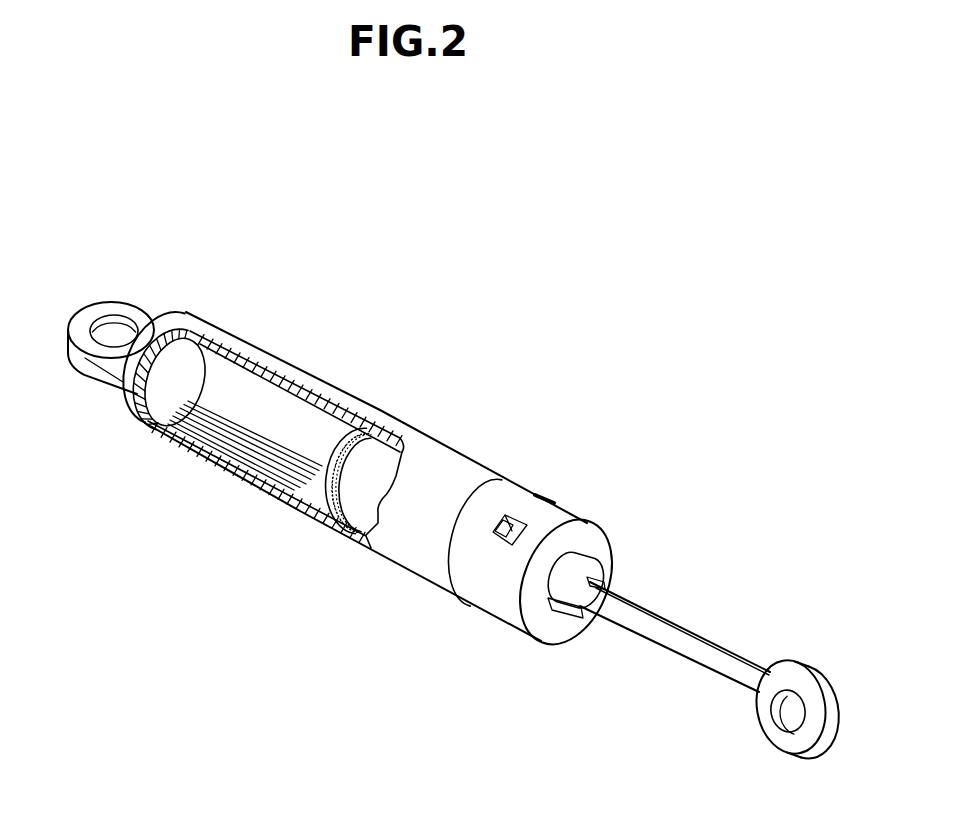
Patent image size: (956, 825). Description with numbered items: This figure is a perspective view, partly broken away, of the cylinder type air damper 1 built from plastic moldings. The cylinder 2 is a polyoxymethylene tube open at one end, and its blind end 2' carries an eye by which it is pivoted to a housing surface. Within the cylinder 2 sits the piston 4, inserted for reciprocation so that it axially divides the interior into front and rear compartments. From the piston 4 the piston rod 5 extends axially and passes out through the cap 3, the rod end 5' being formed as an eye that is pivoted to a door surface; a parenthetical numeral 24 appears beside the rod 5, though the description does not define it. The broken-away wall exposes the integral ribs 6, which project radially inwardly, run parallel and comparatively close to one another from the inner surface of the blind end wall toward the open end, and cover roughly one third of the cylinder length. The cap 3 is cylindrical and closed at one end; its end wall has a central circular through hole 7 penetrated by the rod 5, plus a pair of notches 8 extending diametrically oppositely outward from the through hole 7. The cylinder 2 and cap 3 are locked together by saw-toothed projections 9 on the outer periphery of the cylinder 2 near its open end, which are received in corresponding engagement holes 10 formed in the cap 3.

The cylinder type air damper 1 is at (418, 412).
The cylinder 2 is at (376, 485).
The blind end of the cylinder 2' is at (106, 321).
The cap 3 is at (320, 367).
The piston 4 is at (322, 505).
The piston rod 5 is at (675, 646).
The rod end 5' is at (784, 712).
The rib 6 is at (258, 452).
The through hole 7 is at (590, 577).
The notches 8 is at (608, 581).
The projections 9 is at (494, 526).
The engagement holes 10 is at (550, 498).
The piston rod (alternate numeral) 24 is at (675, 663).